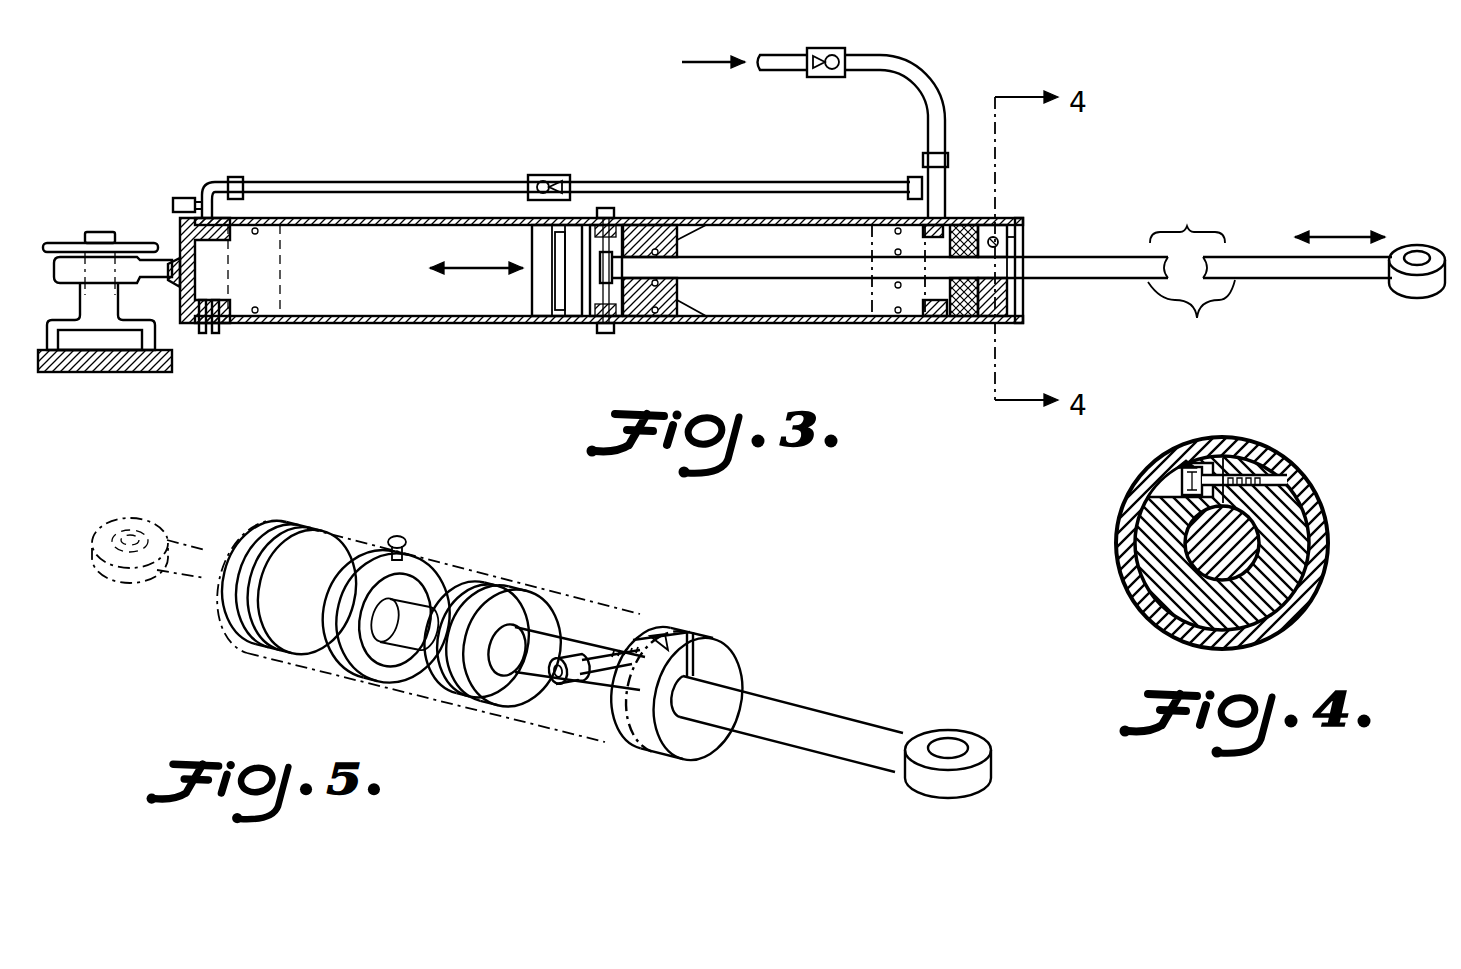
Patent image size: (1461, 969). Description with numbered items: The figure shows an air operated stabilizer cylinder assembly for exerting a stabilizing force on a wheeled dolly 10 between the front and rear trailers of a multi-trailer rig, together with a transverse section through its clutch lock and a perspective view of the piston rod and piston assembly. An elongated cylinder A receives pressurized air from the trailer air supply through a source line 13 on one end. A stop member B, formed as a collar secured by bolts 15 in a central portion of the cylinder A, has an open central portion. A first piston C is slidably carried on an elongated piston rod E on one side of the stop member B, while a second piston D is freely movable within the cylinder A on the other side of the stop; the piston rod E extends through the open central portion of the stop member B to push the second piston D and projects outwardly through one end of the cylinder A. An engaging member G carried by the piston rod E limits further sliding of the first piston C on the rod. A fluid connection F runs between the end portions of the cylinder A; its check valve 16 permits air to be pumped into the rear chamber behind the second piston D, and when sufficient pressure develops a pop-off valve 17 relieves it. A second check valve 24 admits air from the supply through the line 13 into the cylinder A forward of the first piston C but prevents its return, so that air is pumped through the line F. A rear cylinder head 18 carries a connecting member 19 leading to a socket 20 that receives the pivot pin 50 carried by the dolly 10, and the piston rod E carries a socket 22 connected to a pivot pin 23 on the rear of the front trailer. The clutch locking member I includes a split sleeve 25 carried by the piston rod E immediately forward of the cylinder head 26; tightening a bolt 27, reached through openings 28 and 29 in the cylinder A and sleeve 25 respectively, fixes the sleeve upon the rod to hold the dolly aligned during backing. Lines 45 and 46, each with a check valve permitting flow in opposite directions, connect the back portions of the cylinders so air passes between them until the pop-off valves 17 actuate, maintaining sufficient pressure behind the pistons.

In FIG. 3, the wheeled dolly 10 is at (120, 373).
In FIG. 3, the source of pressurized air 13 is at (918, 66).
In FIG. 3, the bolts 15 is at (605, 208).
In FIG. 3, the check valve 16 is at (540, 176).
In FIG. 3, the pop-off valve 17 is at (183, 198).
In FIG. 3, the rear cylinder head 18 is at (178, 296).
In FIG. 3, the connecting member 19 is at (165, 257).
In FIG. 3, the socket 20 is at (106, 283).
In FIG. 3, the socket 22 is at (1395, 283).
In FIG. 5, the socket 22 is at (980, 780).
In FIG. 3, the pivot pin 23 is at (1400, 258).
In FIG. 3, the check valve 24 is at (820, 47).
In FIG. 4, the split sleeve 25 is at (1253, 613).
In FIG. 5, the split sleeve 25 is at (690, 740).
In FIG. 3, the cylinder head 26 is at (935, 323).
In FIG. 4, the bolt 27 is at (1192, 463).
In FIG. 5, the bolt 27 is at (645, 653).
In FIG. 4, the opening 28 is at (1165, 473).
In FIG. 5, the opening 28 is at (652, 640).
In FIG. 4, the opening 29 is at (1178, 485).
In FIG. 3, the line 45 is at (203, 334).
In FIG. 3, the line 46 is at (218, 334).
In FIG. 3, the pivot pin 50 is at (90, 227).
In FIG. 3, the elongated cylinder A is at (352, 323).
In FIG. 4, the elongated cylinder A is at (1312, 603).
In FIG. 5, the elongated cylinder A is at (366, 630).
In FIG. 3, the stop member B is at (597, 218).
In FIG. 5, the stop member B is at (408, 557).
In FIG. 3, the first piston C is at (708, 322).
In FIG. 5, the first piston C is at (520, 600).
In FIG. 3, the second piston D is at (283, 267).
In FIG. 5, the second piston D is at (313, 545).
In FIG. 3, the piston rod E is at (996, 289).
In FIG. 4, the piston rod E is at (1200, 572).
In FIG. 5, the piston rod E is at (567, 650).
In FIG. 3, the fluid connection F is at (668, 182).
In FIG. 3, the engaging member G is at (640, 318).
In FIG. 5, the engaging member G is at (418, 597).
In FIG. 3, the clutch locking member I is at (1010, 296).
In FIG. 4, the clutch locking member I is at (1290, 532).
In FIG. 5, the clutch locking member I is at (720, 663).